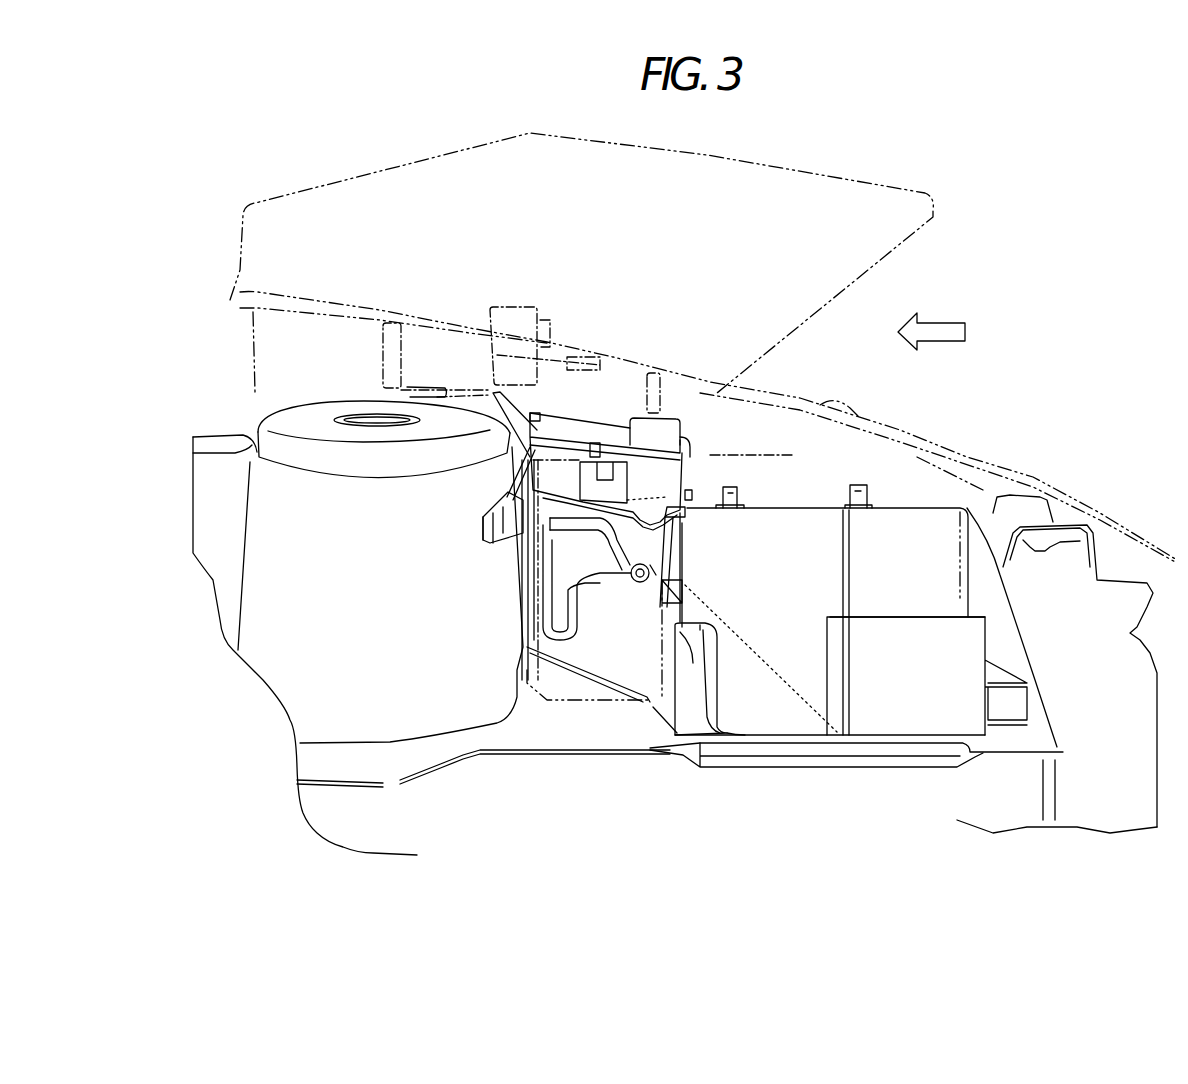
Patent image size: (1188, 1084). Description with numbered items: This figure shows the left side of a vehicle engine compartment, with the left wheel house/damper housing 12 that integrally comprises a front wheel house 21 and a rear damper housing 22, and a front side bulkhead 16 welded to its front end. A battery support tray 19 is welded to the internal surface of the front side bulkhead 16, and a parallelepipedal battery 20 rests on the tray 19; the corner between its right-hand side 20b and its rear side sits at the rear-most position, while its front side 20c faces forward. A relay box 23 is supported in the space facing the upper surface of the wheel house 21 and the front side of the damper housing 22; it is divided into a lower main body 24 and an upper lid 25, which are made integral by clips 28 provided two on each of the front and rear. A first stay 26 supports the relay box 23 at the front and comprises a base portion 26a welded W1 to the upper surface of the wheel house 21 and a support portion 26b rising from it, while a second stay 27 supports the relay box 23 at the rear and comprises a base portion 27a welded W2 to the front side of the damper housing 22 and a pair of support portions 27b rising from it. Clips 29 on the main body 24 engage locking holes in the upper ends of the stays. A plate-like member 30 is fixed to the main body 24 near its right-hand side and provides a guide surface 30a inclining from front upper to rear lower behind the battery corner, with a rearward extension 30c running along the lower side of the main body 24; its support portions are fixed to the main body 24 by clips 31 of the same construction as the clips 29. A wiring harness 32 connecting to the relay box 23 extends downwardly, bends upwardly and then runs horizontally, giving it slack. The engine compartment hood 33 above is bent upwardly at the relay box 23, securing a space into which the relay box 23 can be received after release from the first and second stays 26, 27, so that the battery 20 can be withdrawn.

The wheel house/damper housing 12 is at (282, 403).
The front side bulkhead 16 is at (987, 523).
The battery support tray 19 is at (917, 630).
The battery 20 is at (808, 601).
The right-hand side of battery 20b is at (748, 723).
The front side of battery 20c is at (873, 608).
The front wheel house 21 is at (618, 727).
The rear damper housing 22 is at (412, 722).
The relay box 23 is at (497, 312).
The main body 24 is at (682, 480).
The lid 25 is at (673, 413).
The first stay 26 is at (653, 603).
The base portion 26a is at (693, 600).
The support portion 26b is at (685, 573).
The second stay 27 is at (508, 555).
The base portion 27a is at (510, 557).
The support portion 27b is at (507, 507).
The clip 28 is at (527, 418).
The clip 29 is at (507, 470).
The plate-like member 30 is at (635, 527).
The guide surface 30a is at (680, 548).
The rearward extension 30c is at (568, 507).
The clip 31 is at (593, 443).
The wiring harness 32 is at (537, 620).
The engine compartment hood 33 is at (707, 155).
The weld W1 is at (694, 660).
The weld W2 is at (483, 543).